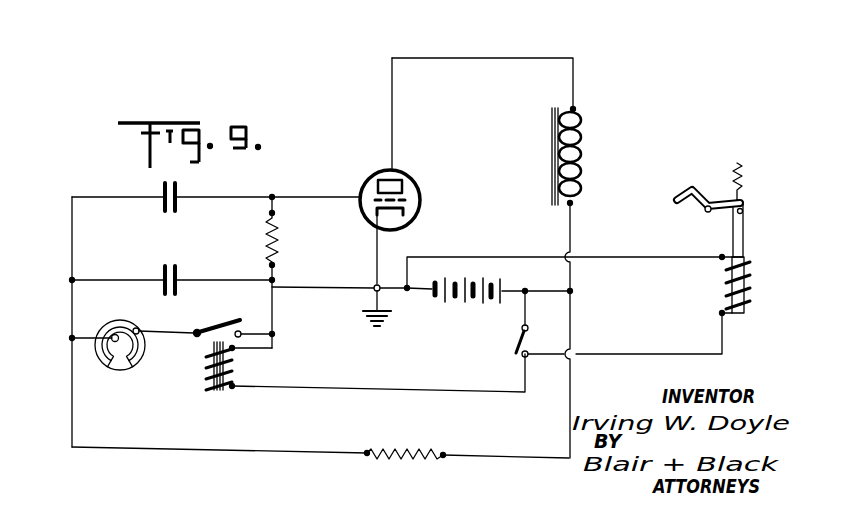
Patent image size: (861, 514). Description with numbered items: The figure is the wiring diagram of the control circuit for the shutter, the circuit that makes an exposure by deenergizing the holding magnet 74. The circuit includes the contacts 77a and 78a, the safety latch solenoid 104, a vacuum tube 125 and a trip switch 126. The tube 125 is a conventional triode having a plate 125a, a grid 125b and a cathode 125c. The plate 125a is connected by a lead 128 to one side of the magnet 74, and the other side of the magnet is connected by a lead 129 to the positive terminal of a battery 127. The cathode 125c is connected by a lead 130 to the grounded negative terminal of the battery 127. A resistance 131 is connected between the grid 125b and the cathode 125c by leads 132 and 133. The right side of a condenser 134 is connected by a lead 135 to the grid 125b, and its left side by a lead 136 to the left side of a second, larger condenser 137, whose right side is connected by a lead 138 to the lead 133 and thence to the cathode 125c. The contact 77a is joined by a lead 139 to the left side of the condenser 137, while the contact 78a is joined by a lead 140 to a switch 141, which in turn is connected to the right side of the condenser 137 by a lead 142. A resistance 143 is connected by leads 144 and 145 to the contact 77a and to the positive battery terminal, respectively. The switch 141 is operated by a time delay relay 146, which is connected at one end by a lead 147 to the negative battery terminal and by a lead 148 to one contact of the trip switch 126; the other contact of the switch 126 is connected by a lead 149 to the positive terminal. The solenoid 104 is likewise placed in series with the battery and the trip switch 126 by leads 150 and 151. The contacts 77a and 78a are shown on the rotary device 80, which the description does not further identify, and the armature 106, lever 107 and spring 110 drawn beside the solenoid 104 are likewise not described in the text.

The holding magnet 74 is at (576, 148).
The contact 77a is at (112, 334).
The contact 78a is at (138, 328).
The rotary contact device 80 is at (124, 346).
The safety latch solenoid 104 is at (746, 290).
The armature 106 is at (745, 222).
The lever 107 is at (696, 188).
The spring 110 is at (741, 176).
The vacuum tube 125 is at (407, 148).
The plate 125a is at (395, 186).
The grid 125b is at (408, 202).
The cathode 125c is at (396, 212).
The trip switch 126 is at (516, 348).
The battery 127 is at (472, 300).
The lead 128 is at (474, 58).
The lead 129 is at (574, 230).
The lead 130 is at (376, 245).
The resistance 131 is at (277, 240).
The lead 132 is at (330, 197).
The lead 133 is at (295, 286).
The condenser 134 is at (158, 190).
The lead 135 is at (205, 197).
The lead 136 is at (70, 237).
The second condenser 137 is at (164, 277).
The lead 138 is at (203, 282).
The lead 139 is at (70, 313).
The lead 140 is at (180, 332).
The switch 141 is at (219, 325).
The lead 142 is at (273, 320).
The resistance 143 is at (402, 462).
The lead 144 is at (140, 450).
The lead 145 is at (532, 462).
The time delay relay 146 is at (210, 364).
The lead 147 is at (266, 350).
The lead 148 is at (383, 394).
The lead 149 is at (527, 315).
The lead 150 is at (503, 258).
The lead 151 is at (590, 357).